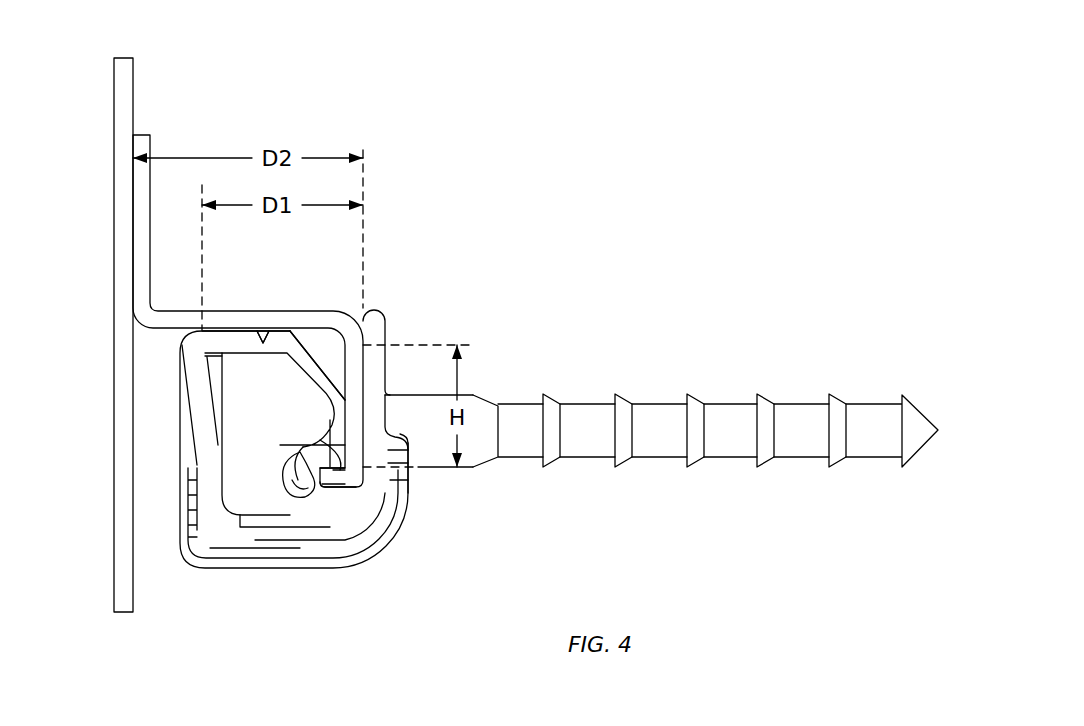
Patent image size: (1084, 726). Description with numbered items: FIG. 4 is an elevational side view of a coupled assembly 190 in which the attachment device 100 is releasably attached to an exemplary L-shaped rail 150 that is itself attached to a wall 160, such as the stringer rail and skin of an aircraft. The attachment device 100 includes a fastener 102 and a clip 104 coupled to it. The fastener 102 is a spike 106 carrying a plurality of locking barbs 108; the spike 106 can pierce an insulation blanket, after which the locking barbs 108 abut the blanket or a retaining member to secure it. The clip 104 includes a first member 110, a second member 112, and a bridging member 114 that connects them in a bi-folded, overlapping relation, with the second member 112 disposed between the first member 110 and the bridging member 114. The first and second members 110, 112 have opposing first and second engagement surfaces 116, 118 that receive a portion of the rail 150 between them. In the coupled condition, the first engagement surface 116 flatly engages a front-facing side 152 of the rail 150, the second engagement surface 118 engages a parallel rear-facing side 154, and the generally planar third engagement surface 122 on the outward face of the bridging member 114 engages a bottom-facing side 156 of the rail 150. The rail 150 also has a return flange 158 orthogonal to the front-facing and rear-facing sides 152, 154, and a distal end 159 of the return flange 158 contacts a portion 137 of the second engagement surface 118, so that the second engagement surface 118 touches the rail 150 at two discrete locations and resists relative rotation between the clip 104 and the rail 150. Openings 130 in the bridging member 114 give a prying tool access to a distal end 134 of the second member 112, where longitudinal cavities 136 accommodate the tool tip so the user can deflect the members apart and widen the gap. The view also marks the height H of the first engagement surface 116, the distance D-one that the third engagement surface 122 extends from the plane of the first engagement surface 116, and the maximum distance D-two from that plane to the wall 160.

The attachment device 100 is at (480, 313).
The fastener 102 is at (645, 406).
The clip 104 is at (263, 444).
The spike 106 is at (802, 447).
The locking barbs 108 is at (832, 398).
The first member 110 is at (375, 357).
The second member 112 is at (310, 373).
The bridging member 114 is at (205, 422).
The first engagement surface 116 is at (352, 387).
The second engagement surface 118 is at (347, 410).
The third engagement surface 122 is at (205, 327).
The openings 130 is at (273, 530).
The distal end 134 is at (296, 503).
The longitudinal cavities 136 is at (300, 487).
The portion 137 is at (318, 490).
The rail 150 is at (173, 312).
The front-facing side 152 is at (408, 470).
The rear-facing side 154 is at (345, 450).
The bottom-facing side 156 is at (275, 340).
The return flange 158 is at (330, 478).
The distal end 159 is at (322, 484).
The wall 160 is at (125, 72).
The coupled assembly 190 is at (548, 210).